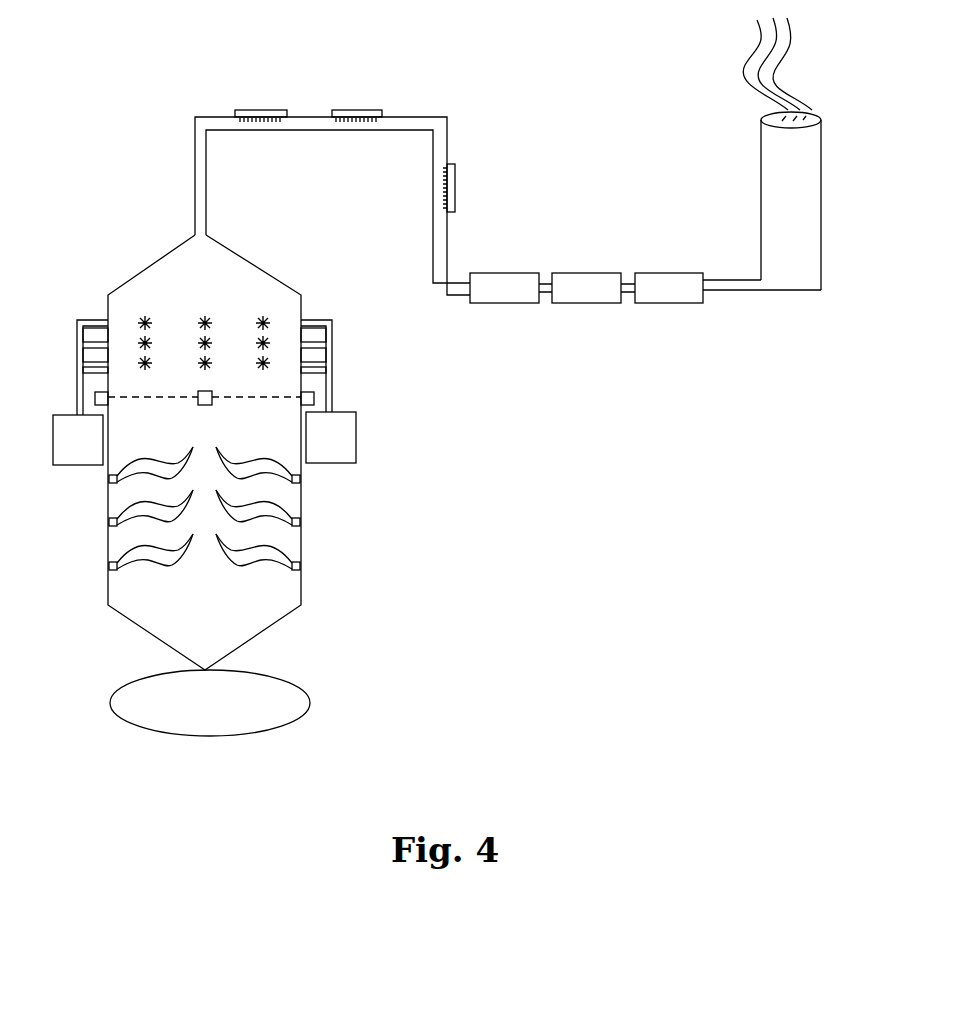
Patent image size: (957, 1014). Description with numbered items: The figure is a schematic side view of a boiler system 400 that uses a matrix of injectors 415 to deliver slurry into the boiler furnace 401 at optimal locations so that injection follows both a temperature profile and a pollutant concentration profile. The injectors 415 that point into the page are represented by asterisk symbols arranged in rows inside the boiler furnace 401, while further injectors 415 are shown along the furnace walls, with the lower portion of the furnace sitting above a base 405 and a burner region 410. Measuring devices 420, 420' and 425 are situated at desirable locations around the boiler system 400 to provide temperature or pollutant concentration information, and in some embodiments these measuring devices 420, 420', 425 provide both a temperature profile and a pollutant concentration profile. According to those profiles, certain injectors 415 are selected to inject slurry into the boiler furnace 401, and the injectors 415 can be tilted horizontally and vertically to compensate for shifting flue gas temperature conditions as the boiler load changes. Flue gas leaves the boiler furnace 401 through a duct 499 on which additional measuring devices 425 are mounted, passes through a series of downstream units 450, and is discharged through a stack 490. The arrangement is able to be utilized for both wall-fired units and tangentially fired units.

The boiler system 400 is at (81, 80).
The boiler furnace 401 is at (189, 292).
The ash collection / base 405 is at (195, 713).
The burners 410 is at (103, 568).
The injectors 415 is at (97, 318).
The measuring device 420 is at (72, 411).
The measuring device 420' is at (338, 406).
The measuring device 425 is at (257, 109).
The treatment units 450 is at (705, 263).
The exhaust stack 490 is at (821, 178).
The exhaust duct 499 is at (195, 176).